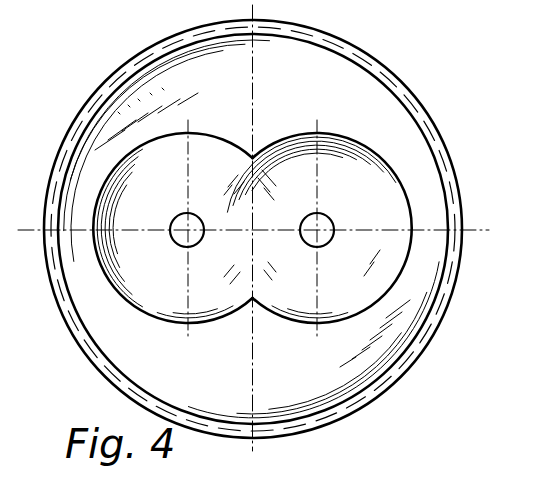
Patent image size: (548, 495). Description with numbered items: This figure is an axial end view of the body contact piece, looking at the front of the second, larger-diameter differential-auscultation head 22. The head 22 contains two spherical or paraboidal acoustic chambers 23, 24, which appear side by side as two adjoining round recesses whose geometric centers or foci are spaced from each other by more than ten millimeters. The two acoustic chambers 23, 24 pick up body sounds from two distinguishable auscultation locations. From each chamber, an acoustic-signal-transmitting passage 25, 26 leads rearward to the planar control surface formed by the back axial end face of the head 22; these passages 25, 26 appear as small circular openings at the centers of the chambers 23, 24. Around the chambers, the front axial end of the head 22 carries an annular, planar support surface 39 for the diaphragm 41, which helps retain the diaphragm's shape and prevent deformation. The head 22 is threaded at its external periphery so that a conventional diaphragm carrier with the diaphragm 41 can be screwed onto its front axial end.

The differential-auscultation head 22 is at (293, 96).
The acoustic chamber 23 is at (176, 286).
The acoustic chamber 24 is at (310, 286).
The acoustic-signal-transmitting passage 25 is at (198, 218).
The acoustic-signal-transmitting passage 26 is at (322, 222).
The annular planar support surface 39 is at (384, 67).
The diaphragm 41 is at (430, 107).